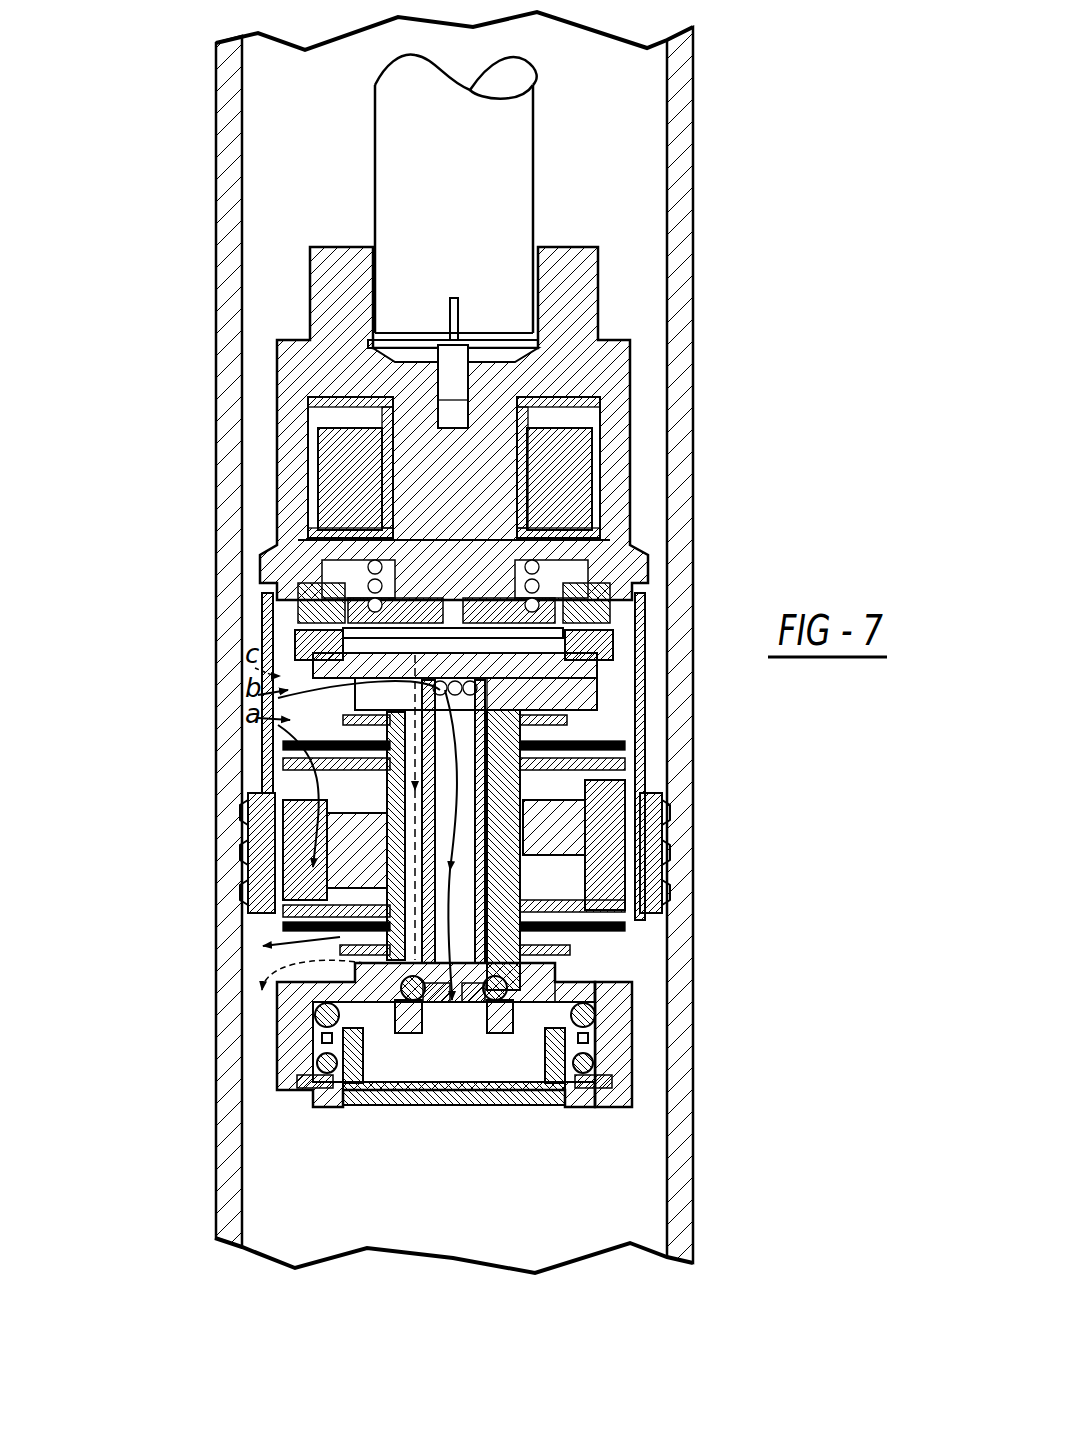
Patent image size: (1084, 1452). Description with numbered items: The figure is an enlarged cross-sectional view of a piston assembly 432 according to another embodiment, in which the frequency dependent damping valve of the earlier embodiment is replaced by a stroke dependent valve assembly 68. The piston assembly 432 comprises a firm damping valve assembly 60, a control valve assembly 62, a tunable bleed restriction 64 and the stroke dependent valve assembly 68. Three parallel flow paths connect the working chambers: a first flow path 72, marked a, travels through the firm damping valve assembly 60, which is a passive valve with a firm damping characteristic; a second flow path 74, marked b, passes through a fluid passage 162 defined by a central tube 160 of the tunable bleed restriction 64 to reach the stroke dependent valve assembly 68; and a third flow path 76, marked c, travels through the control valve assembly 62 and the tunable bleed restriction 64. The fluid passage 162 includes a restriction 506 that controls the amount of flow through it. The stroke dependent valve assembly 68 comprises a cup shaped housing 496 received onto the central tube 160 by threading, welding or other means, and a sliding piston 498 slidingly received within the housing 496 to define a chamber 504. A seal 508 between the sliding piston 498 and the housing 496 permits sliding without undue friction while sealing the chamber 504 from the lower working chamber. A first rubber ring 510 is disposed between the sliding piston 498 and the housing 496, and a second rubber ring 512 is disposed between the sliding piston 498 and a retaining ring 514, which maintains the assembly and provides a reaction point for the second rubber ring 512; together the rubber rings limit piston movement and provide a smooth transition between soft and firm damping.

The firm damping valve assembly 60 is at (228, 848).
The control valve assembly 62 is at (640, 441).
The tunable bleed restriction 64 is at (397, 965).
The stroke dependent valve assembly 68 is at (333, 1120).
The first flow path 72 is at (297, 827).
The second flow path 74 is at (448, 942).
The third flow path 76 is at (412, 742).
The central tube 160 is at (482, 835).
The fluid passage 162 is at (460, 890).
The piston assembly 432 is at (256, 550).
The housing 496 is at (620, 1018).
The sliding piston 498 is at (487, 1100).
The chamber 504 is at (450, 1058).
The restriction 506 is at (468, 995).
The seal 508 is at (322, 1036).
The first rubber ring 510 is at (605, 1003).
The second rubber ring 512 is at (590, 1062).
The retaining ring 514 is at (582, 1090).